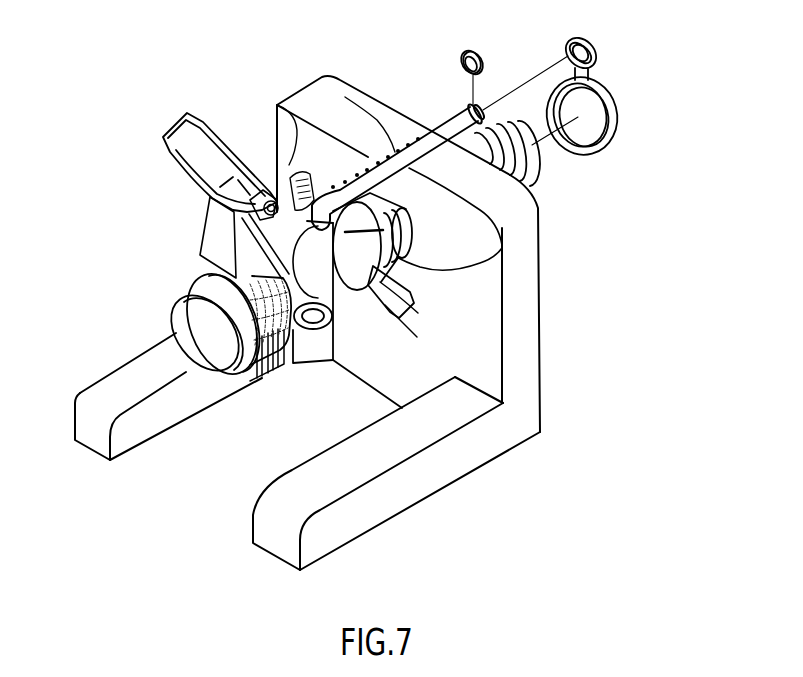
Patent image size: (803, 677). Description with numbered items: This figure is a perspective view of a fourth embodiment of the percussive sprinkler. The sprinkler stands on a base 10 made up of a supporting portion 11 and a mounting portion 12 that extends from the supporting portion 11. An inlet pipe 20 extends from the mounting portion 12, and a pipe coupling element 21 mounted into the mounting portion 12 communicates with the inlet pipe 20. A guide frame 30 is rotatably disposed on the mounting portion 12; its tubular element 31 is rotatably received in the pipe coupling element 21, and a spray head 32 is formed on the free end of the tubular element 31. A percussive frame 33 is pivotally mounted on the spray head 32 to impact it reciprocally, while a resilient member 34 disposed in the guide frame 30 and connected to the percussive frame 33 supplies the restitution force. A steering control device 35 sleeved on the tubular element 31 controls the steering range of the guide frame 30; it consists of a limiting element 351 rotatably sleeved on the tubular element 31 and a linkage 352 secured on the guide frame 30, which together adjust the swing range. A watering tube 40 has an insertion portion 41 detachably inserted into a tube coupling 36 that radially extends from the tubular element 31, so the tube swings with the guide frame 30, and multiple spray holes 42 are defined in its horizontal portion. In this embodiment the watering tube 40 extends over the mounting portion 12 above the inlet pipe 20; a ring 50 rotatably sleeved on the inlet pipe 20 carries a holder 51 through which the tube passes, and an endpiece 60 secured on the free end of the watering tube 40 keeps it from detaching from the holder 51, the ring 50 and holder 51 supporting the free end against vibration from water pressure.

The base 10 is at (443, 520).
The supporting portion 11 is at (477, 469).
The mounting portion 12 is at (540, 272).
The inlet pipe 20 is at (549, 178).
The pipe coupling element 21 is at (502, 236).
The guide frame 30 is at (172, 221).
The tubular element 31 is at (330, 322).
The spray head 32 is at (302, 338).
The percussive frame 33 is at (170, 130).
The resilient member 34 is at (195, 291).
The steering control device 35 is at (597, 327).
The limiting element 351 is at (418, 313).
The linkage 352 is at (417, 337).
The tube coupling 36 is at (405, 300).
The watering tube 40 is at (234, 47).
The insertion portion 41 is at (277, 101).
The spray holes 42 is at (365, 168).
The ring 50 is at (616, 110).
The holder 51 is at (598, 53).
The endpiece 60 is at (464, 54).